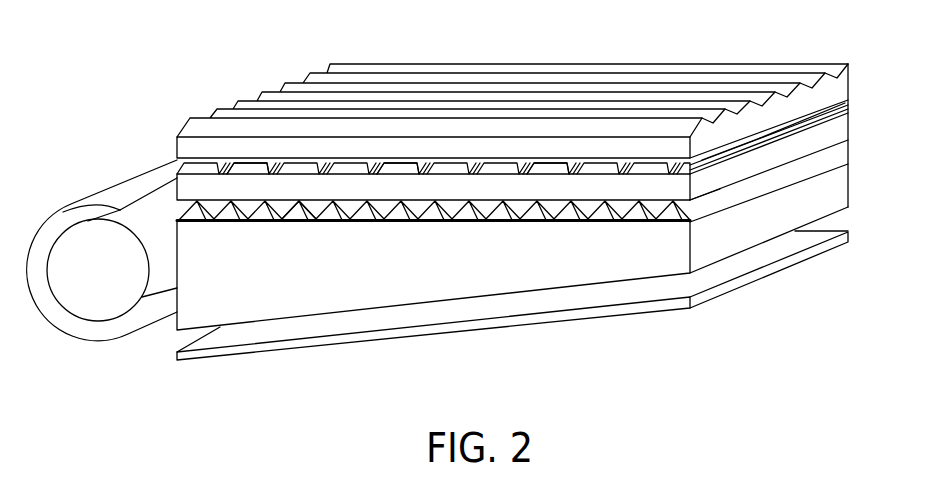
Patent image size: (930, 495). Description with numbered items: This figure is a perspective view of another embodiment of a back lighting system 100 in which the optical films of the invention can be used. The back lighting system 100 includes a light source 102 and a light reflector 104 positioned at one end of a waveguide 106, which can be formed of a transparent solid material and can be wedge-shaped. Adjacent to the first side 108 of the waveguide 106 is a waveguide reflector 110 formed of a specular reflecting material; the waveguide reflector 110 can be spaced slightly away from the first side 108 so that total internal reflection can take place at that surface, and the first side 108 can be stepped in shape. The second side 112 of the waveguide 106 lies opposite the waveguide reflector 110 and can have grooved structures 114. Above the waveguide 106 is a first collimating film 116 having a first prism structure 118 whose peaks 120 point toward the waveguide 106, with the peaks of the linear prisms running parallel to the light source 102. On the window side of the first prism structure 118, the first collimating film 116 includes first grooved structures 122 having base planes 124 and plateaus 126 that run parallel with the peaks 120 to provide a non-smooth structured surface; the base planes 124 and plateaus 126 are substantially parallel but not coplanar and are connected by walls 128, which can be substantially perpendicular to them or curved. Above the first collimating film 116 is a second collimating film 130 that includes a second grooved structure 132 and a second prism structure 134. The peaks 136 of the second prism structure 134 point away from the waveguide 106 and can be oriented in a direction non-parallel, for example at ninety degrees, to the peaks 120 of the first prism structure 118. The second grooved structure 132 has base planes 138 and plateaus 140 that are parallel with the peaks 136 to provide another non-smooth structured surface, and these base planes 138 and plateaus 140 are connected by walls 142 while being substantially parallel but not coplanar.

The back lighting system 100 is at (263, 382).
The light source 102 is at (98, 322).
The light reflector 104 is at (60, 218).
The waveguide 106 is at (848, 207).
The first side 108 is at (642, 283).
The waveguide reflector 110 is at (770, 278).
The second side 112 is at (813, 172).
The grooved structures 114 is at (458, 225).
The first collimating film 116 is at (850, 130).
The first prism structure 118 is at (228, 222).
The peaks 120 is at (286, 222).
The first grooved structures 122 is at (565, 176).
The base planes 124 is at (398, 173).
The plateaus 126 is at (480, 175).
The walls 128 is at (293, 172).
The second collimating film 130 is at (850, 87).
The second grooved structure 132 is at (742, 125).
The second prism structure 134 is at (808, 77).
The peaks 136 is at (598, 63).
The base planes 138 is at (760, 122).
The plateaus 140 is at (787, 112).
The walls 142 is at (712, 148).